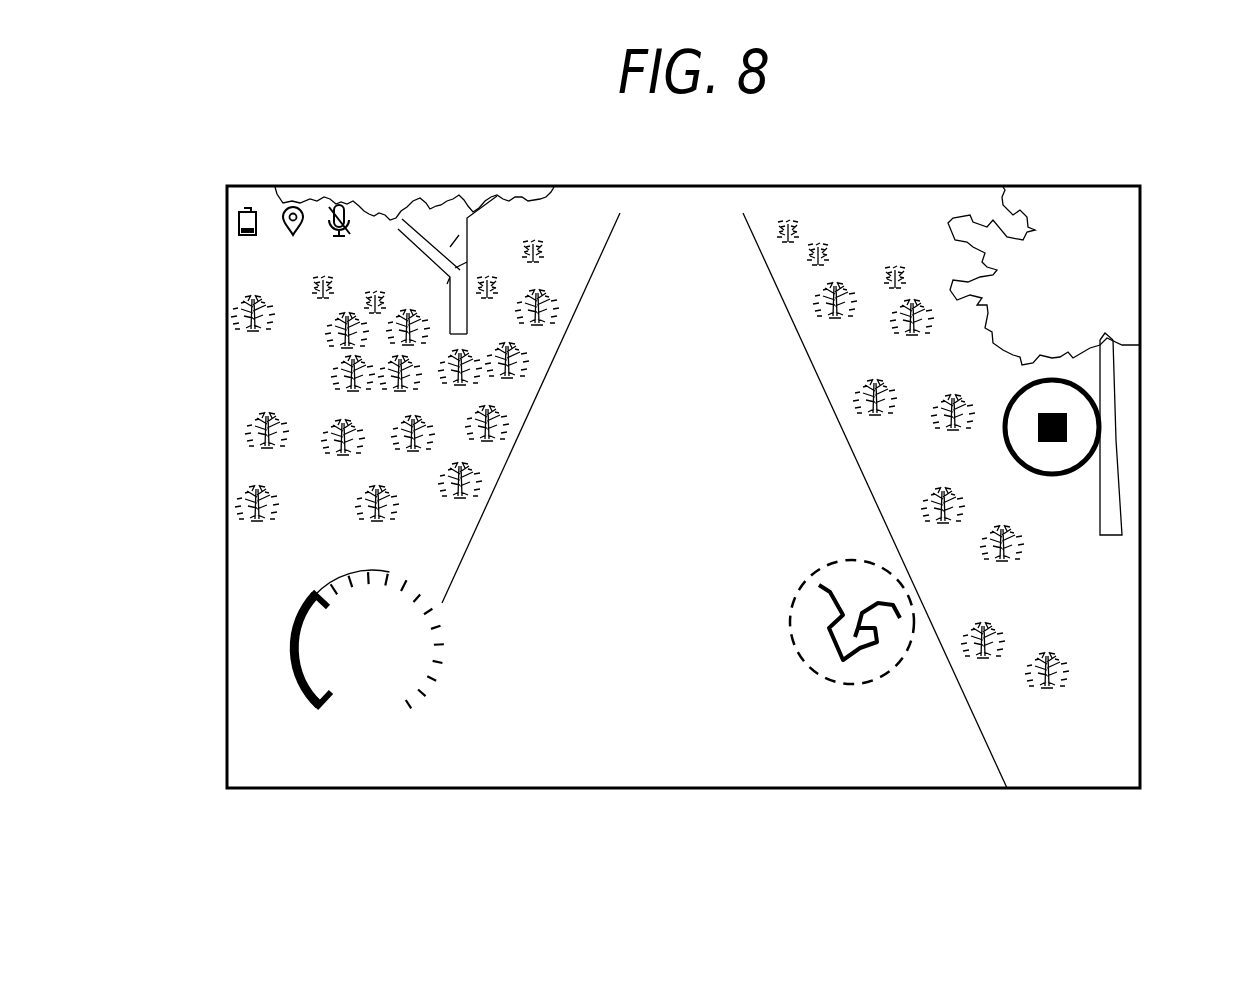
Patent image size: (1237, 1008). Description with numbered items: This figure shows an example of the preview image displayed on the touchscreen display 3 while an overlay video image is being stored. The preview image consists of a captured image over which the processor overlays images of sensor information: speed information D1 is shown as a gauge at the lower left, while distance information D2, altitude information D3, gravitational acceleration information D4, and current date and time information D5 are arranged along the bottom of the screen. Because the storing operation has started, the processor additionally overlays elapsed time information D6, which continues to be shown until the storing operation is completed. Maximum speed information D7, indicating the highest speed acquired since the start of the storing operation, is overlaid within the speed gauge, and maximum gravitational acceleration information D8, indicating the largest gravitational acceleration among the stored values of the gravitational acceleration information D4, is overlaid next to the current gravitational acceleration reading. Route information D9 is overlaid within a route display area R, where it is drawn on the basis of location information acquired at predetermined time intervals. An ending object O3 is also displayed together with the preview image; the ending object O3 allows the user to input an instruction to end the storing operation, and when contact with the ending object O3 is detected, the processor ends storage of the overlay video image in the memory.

The touchscreen display 3 is at (838, 170).
The speed information D1 is at (283, 665).
The distance information D2 is at (527, 768).
The altitude information D3 is at (687, 768).
The gravitational acceleration information D4 is at (840, 768).
The current date and time information D5 is at (1063, 768).
The elapsed time information D6 is at (368, 772).
The maximum speed information D7 is at (420, 667).
The maximum gravitational acceleration information D8 is at (932, 768).
The route information D9 is at (827, 627).
The route display area R is at (798, 655).
The ending object O3 is at (1085, 423).